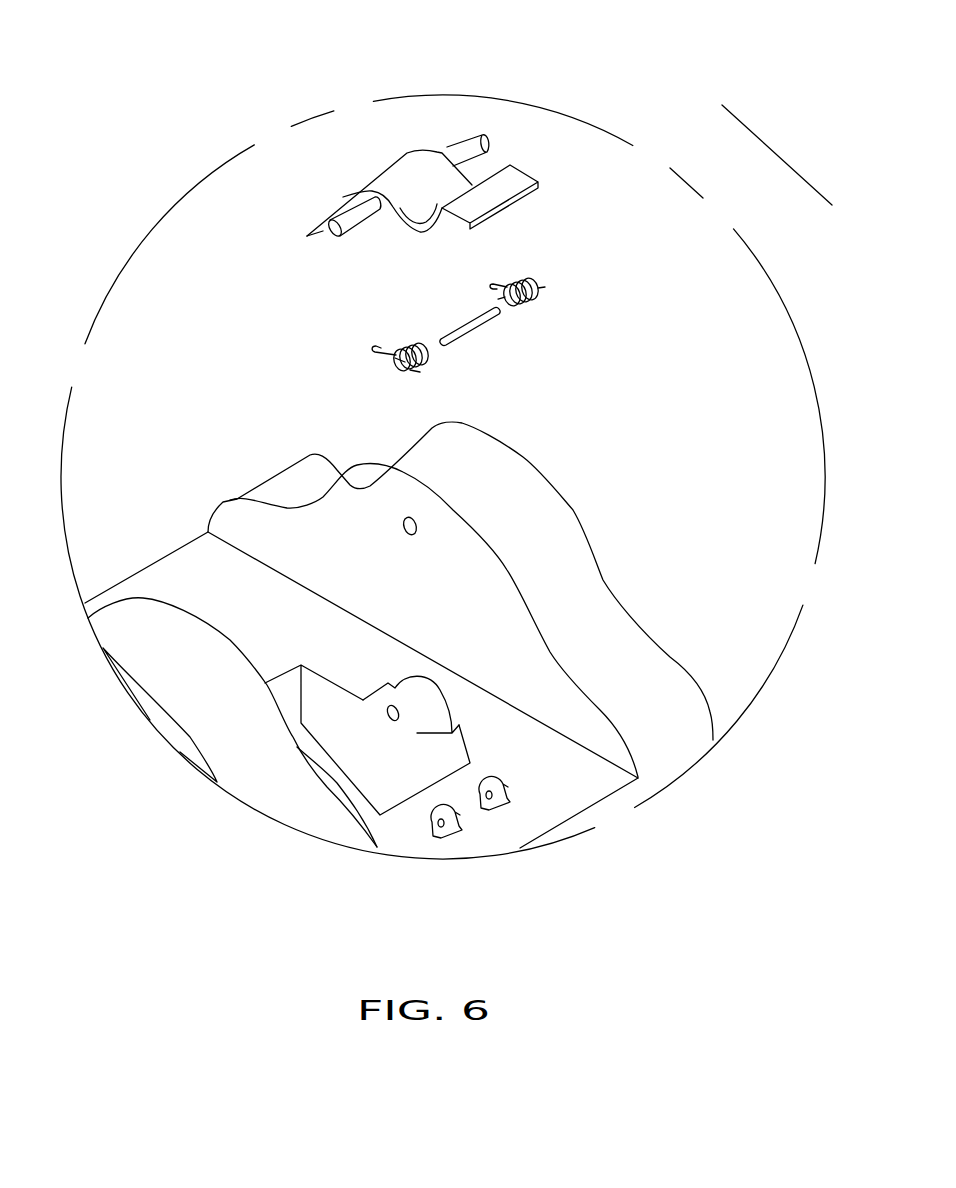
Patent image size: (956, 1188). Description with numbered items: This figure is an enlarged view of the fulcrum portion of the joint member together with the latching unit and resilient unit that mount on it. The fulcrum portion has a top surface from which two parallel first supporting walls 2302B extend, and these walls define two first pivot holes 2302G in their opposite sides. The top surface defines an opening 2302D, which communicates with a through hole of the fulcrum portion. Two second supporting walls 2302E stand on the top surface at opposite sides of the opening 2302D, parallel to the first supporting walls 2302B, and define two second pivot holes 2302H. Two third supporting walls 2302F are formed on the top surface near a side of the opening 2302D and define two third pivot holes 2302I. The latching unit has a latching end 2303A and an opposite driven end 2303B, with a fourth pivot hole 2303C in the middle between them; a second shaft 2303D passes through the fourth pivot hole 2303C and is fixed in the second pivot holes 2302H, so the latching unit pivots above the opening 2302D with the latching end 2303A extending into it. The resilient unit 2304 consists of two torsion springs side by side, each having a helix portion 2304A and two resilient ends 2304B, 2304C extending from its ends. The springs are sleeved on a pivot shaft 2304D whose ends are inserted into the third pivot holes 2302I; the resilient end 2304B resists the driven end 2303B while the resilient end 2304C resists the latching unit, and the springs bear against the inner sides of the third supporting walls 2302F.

The latching end 2303A is at (315, 218).
The driven end 2303B is at (519, 175).
The fourth pivot hole 2303C is at (395, 155).
The second shaft 2303D is at (463, 147).
The resilient unit 2304 is at (444, 263).
The helix portion 2304A is at (413, 368).
The resilient end 2304B is at (377, 350).
The resilient end 2304C is at (402, 350).
The pivot shaft 2304D is at (470, 332).
The first supporting walls 2302B is at (575, 610).
The opening 2302D is at (342, 770).
The second supporting walls 2302E is at (423, 702).
The third supporting walls 2302F is at (490, 799).
The first pivot holes 2302G is at (418, 527).
The second pivot holes 2302H is at (391, 720).
The third pivot holes 2302I is at (440, 827).